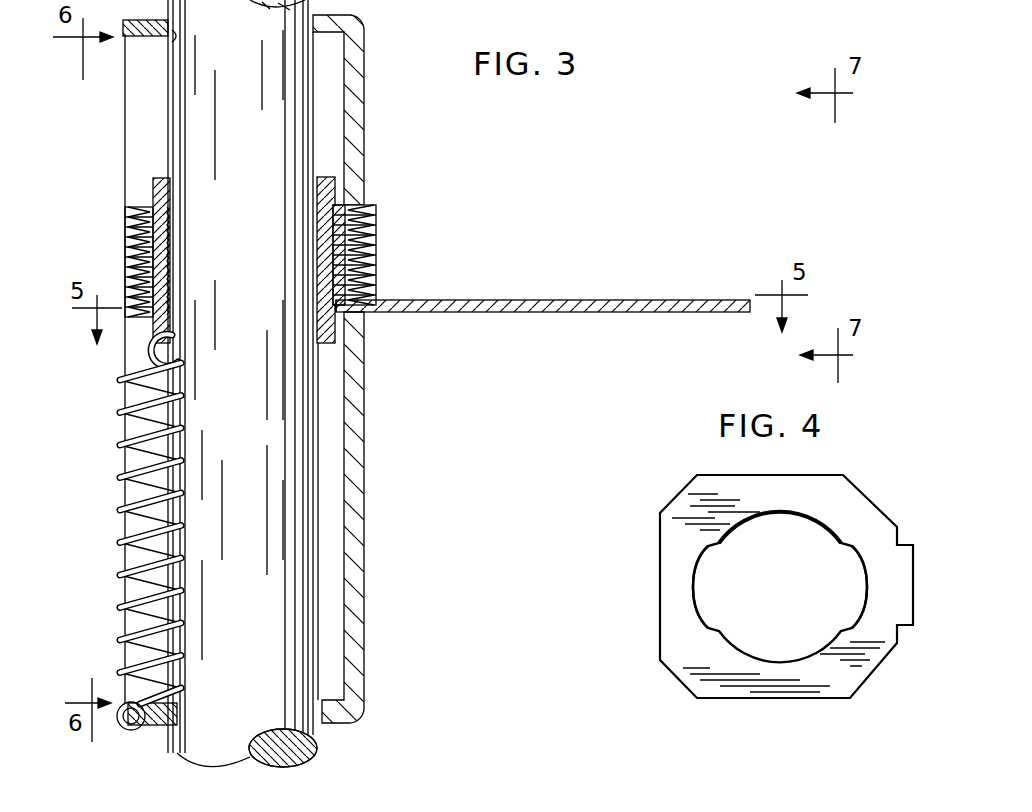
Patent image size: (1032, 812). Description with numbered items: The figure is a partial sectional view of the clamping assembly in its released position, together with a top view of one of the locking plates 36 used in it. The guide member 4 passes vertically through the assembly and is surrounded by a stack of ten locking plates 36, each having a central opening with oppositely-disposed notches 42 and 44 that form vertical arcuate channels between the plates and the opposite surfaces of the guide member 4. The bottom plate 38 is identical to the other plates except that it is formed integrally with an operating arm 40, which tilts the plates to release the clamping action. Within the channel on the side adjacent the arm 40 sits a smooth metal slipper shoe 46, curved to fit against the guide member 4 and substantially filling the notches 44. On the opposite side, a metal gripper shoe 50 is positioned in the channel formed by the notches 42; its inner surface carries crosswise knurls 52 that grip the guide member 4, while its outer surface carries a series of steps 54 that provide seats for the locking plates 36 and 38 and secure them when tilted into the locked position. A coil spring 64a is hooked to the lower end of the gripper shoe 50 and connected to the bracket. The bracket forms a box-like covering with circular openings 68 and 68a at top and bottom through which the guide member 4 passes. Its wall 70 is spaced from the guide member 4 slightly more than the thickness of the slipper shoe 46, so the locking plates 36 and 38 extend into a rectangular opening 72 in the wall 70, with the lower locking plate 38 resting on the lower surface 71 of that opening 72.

In FIG. 3, the guide member 4 is at (287, 625).
In FIG. 3, the locking plate 36 is at (373, 254).
In FIG. 4, the locking plate 36 is at (868, 523).
In FIG. 3, the bottom plate 38 is at (129, 318).
In FIG. 3, the operating arm 40 is at (482, 308).
In FIG. 4, the notch 42 is at (692, 599).
In FIG. 4, the notch 44 is at (862, 580).
In FIG. 3, the slipper shoe 46 is at (325, 237).
In FIG. 3, the gripper shoe 50 is at (162, 267).
In FIG. 3, the knurls 52 is at (169, 291).
In FIG. 3, the steps 54 is at (138, 239).
In FIG. 3, the coil spring 64a is at (122, 446).
In FIG. 3, the circular opening 68 is at (176, 42).
In FIG. 3, the circular opening 68a is at (322, 712).
In FIG. 3, the wall 70 is at (353, 398).
In FIG. 3, the lower surface 71 is at (370, 302).
In FIG. 3, the rectangular opening 72 is at (353, 192).